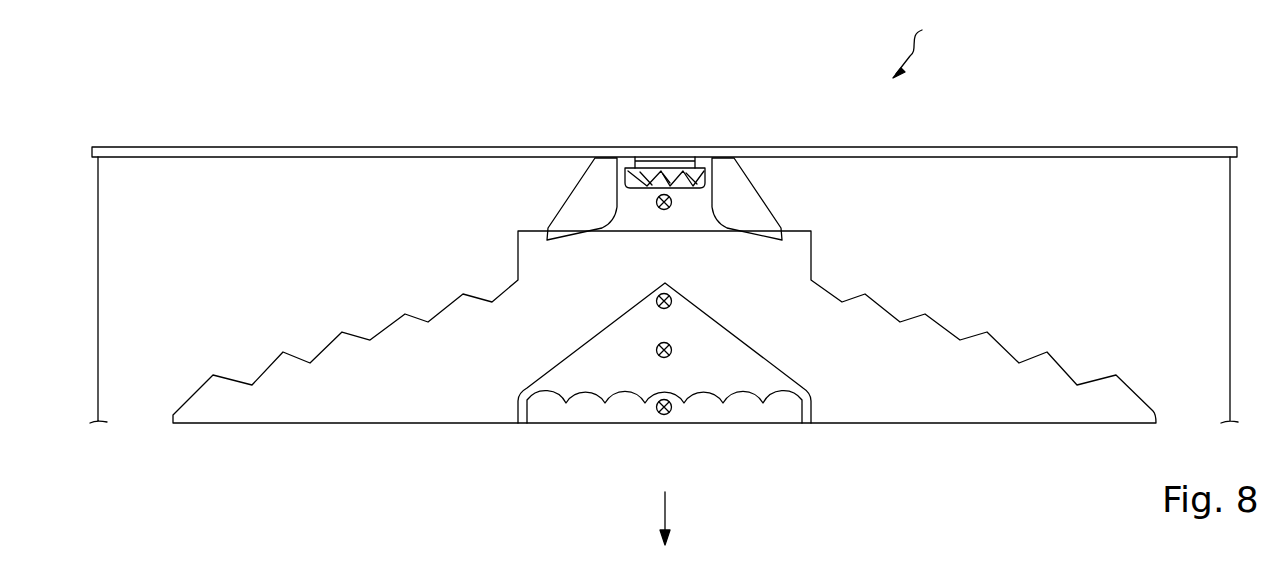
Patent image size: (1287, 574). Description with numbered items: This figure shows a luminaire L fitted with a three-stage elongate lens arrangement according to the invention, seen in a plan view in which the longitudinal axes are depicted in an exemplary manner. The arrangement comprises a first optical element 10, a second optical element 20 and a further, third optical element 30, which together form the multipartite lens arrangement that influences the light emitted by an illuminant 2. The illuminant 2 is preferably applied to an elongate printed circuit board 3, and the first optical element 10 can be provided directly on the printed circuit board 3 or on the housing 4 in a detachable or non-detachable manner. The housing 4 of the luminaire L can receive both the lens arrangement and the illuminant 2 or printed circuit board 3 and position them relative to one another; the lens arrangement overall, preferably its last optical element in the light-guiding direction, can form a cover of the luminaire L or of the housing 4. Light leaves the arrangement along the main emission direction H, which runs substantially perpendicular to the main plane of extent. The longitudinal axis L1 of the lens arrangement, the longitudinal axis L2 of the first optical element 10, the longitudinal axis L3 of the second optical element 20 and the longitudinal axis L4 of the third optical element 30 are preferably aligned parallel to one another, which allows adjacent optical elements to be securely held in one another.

The illuminant 2 is at (705, 167).
The printed circuit board 3 is at (648, 160).
The housing 4 is at (1067, 148).
The first optical element 10 is at (753, 205).
The second optical element 20 is at (927, 407).
The third optical element 30 is at (737, 412).
The luminaire L is at (917, 47).
The main emission direction H is at (667, 513).
The longitudinal axis of the lens arrangement L1 is at (673, 302).
The longitudinal axis of the first optical element L2 is at (655, 208).
The longitudinal axis of the second optical element L3 is at (657, 352).
The longitudinal axis of the third optical element L4 is at (657, 412).